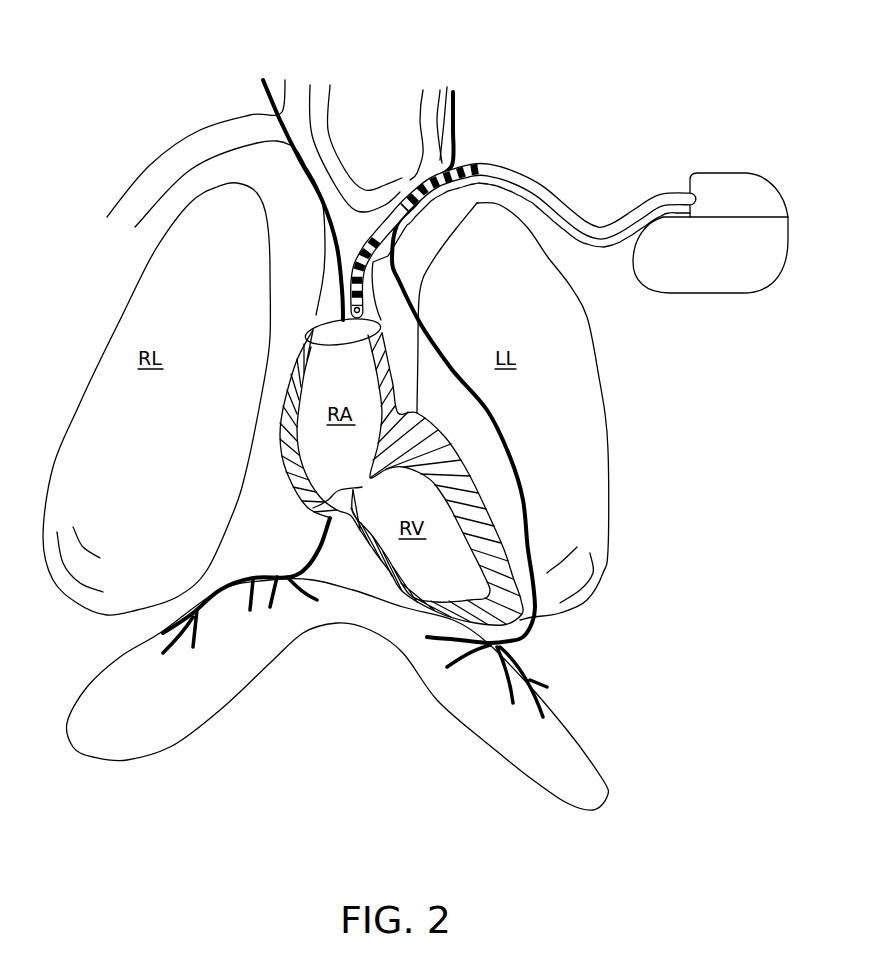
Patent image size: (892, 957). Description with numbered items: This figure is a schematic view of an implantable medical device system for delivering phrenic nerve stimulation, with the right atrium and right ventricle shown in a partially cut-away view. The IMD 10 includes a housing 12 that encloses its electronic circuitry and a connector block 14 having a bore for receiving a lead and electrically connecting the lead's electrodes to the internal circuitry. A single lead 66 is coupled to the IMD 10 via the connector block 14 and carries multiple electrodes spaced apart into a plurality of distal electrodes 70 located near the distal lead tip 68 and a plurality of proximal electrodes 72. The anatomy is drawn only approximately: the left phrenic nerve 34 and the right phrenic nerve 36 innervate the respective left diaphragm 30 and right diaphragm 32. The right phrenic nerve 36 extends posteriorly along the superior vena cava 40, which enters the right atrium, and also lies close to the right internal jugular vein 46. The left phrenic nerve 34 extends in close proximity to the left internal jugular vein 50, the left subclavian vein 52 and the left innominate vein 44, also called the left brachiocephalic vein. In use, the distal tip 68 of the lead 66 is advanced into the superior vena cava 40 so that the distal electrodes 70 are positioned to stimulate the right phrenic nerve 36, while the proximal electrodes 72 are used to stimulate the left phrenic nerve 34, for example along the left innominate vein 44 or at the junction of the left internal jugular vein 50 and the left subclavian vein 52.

The IMD 10 is at (727, 210).
The housing 12 is at (712, 293).
The connector block 14 is at (738, 138).
The left diaphragm 30 is at (573, 777).
The right diaphragm 32 is at (348, 696).
The left phrenic nerve 34 is at (455, 143).
The right phrenic nerve 36 is at (260, 88).
The superior vena cava 40 is at (320, 285).
The left innominate vein 44 is at (377, 205).
The right internal jugular vein 46 is at (310, 92).
The left internal jugular vein 50 is at (423, 98).
The left subclavian vein 52 is at (563, 193).
The lead 66 is at (623, 210).
The distal lead tip 68 is at (380, 322).
The distal electrodes 70 is at (349, 277).
The proximal electrodes 72 is at (407, 200).